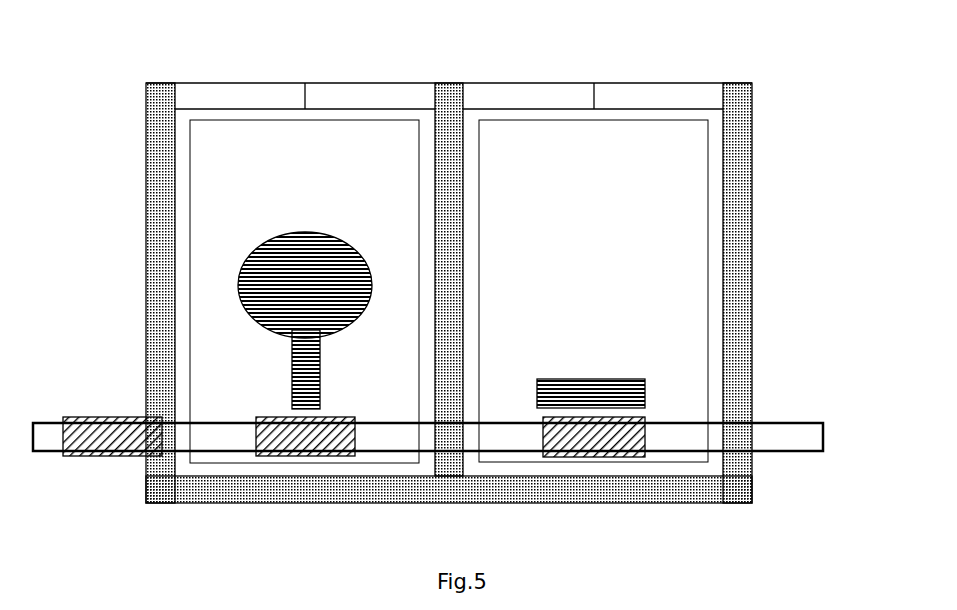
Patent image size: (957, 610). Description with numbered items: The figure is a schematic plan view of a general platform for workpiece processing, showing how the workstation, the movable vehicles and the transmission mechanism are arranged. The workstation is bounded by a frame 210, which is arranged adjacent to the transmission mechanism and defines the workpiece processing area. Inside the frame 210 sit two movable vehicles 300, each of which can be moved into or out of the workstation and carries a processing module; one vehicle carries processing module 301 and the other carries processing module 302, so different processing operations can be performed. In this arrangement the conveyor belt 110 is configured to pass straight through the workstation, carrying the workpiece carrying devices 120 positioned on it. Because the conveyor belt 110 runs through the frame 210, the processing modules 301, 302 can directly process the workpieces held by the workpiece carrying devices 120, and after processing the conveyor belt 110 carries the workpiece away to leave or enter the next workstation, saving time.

The conveyor belt 110 is at (775, 423).
The workpiece carrying device 120 is at (255, 417).
The frame 210 is at (155, 131).
The movable vehicle 300 is at (540, 118).
The processing module 301 is at (230, 300).
The processing module 302 is at (648, 380).